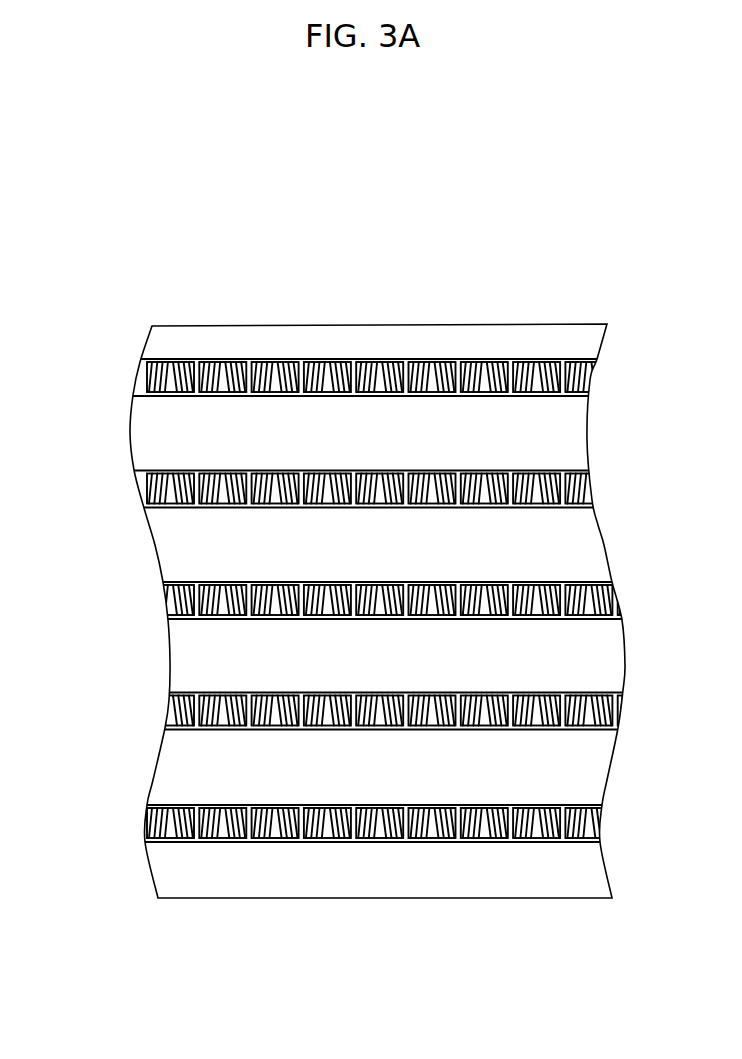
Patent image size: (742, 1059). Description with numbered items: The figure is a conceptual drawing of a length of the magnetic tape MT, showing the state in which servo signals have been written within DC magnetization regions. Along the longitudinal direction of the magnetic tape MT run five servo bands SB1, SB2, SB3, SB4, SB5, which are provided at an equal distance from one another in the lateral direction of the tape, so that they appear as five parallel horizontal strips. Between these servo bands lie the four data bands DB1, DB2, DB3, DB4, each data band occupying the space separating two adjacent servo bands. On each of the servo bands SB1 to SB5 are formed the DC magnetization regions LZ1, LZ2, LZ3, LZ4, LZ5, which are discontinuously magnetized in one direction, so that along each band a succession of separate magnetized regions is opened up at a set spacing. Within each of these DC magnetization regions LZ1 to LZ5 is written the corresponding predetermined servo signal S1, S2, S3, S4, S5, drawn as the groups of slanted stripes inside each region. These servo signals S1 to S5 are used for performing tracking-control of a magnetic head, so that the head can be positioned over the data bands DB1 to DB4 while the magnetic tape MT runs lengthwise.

The magnetic tape MT is at (535, 334).
The servo band SB1 is at (588, 378).
The servo band SB2 is at (587, 490).
The servo band SB3 is at (605, 600).
The servo band SB4 is at (615, 712).
The servo band SB5 is at (600, 822).
The data band DB1 is at (610, 655).
The data band DB2 is at (590, 545).
The data band DB3 is at (605, 768).
The data band DB4 is at (578, 433).
The servo signal S1 is at (147, 380).
The servo signal S2 is at (145, 492).
The servo signal S3 is at (168, 600).
The servo signal S4 is at (175, 710).
The servo signal S5 is at (150, 825).
The DC magnetization region LZ1 is at (170, 370).
The DC magnetization region LZ2 is at (170, 485).
The DC magnetization region LZ3 is at (222, 594).
The DC magnetization region LZ4 is at (222, 704).
The DC magnetization region LZ5 is at (172, 817).